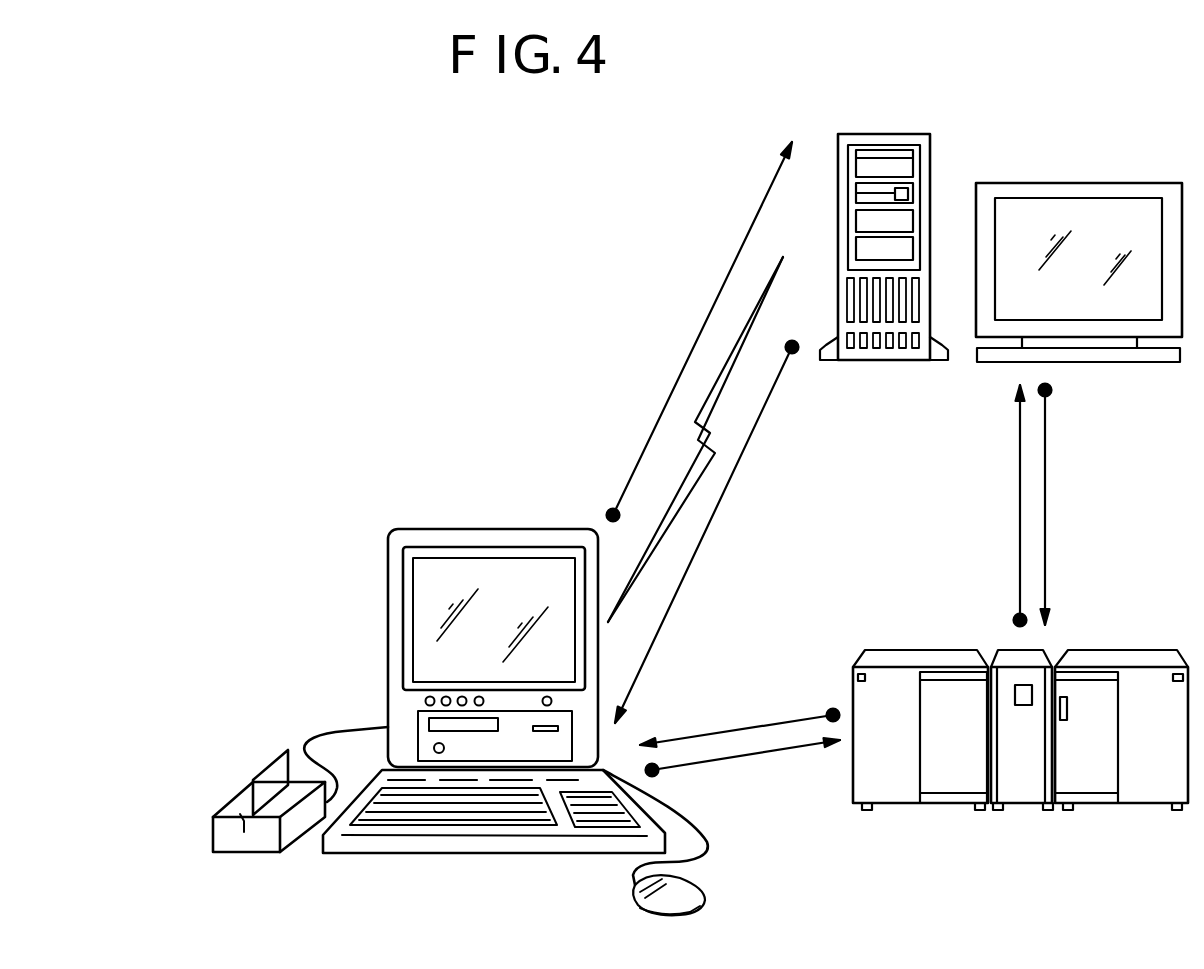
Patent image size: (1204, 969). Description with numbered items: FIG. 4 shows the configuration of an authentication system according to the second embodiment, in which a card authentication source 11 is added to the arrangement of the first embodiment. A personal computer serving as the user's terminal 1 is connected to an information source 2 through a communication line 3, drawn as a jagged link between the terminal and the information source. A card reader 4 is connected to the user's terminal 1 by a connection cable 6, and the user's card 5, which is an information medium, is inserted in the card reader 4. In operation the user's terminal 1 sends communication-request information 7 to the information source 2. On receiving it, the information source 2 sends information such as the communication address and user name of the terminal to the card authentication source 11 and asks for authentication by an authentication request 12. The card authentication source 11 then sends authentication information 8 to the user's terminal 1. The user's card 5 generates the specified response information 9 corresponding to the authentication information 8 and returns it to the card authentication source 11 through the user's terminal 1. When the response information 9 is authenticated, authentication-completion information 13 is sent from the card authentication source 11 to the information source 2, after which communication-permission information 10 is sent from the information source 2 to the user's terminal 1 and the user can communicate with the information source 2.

The user's terminal 1 is at (477, 528).
The information source 2 is at (1188, 97).
The communication line 3 is at (763, 317).
The card reader 4 is at (302, 823).
The user's card 5 is at (275, 757).
The connection cable 6 is at (338, 730).
The communication-request information 7 is at (747, 238).
The authentication information 8 is at (742, 730).
The response information 9 is at (782, 753).
The communication-permission information 10 is at (732, 479).
The card authentication source 11 is at (1123, 648).
The authentication request 12 is at (1047, 476).
The authentication-completion information 13 is at (1018, 480).